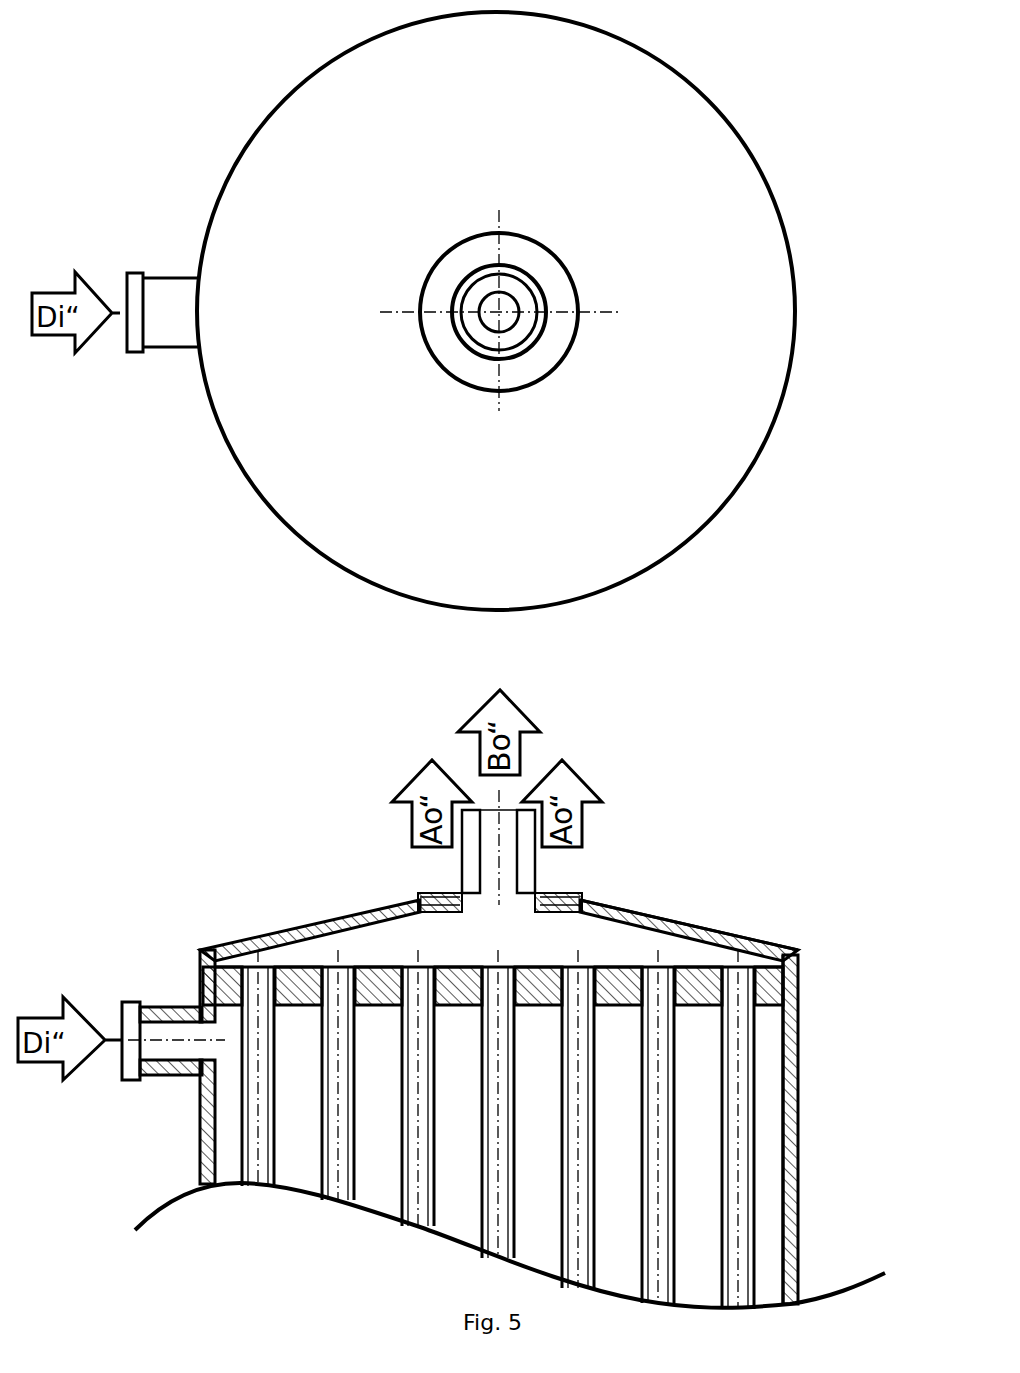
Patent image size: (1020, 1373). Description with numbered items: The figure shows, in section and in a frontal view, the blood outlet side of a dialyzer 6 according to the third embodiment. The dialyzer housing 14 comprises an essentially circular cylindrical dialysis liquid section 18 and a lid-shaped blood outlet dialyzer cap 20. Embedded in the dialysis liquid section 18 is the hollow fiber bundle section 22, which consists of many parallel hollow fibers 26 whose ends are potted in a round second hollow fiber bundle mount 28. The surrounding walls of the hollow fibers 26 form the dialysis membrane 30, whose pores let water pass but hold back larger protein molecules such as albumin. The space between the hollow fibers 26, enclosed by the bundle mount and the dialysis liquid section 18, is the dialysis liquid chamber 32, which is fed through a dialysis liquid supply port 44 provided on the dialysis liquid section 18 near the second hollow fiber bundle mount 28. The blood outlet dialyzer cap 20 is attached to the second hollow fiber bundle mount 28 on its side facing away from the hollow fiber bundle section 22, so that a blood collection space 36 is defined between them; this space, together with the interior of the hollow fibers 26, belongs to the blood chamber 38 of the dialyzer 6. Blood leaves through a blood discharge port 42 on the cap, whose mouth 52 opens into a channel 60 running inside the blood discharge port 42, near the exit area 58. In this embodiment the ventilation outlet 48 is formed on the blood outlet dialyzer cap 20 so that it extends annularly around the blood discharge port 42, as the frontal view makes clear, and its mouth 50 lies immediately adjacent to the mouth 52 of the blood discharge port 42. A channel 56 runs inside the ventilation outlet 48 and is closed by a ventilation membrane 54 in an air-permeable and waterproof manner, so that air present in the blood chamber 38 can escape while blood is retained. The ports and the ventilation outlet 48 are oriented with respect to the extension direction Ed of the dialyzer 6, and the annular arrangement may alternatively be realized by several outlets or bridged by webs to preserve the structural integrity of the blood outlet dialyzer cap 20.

The dialyzer 6 is at (200, 806).
The dialyzer housing 14 is at (800, 1223).
The dialysis liquid section 18 is at (797, 1158).
The blood outlet dialyzer cap 20 is at (695, 930).
The hollow fiber bundle section 22 is at (760, 1197).
The hollow fibers 26 is at (752, 1140).
The second hollow fiber bundle mount 28 is at (198, 987).
The dialysis membrane 30 is at (831, 1129).
The dialysis liquid chamber 32 is at (293, 1112).
The blood collection space 36 is at (612, 937).
The blood chamber 38 is at (333, 1062).
The blood discharge port 42 is at (545, 282).
The dialysis liquid supply port 44 is at (150, 1067).
The ventilation outlet 48 is at (440, 280).
The mouth of the ventilation outlet 50 is at (605, 998).
The mouth of the blood discharge port 52 is at (437, 897).
The ventilation membrane 54 is at (415, 904).
The channel 56 is at (444, 492).
The exit area 58 is at (519, 810).
The channel running inside the blood discharge port 60 is at (510, 307).
The extension direction of the dialyzer Ed is at (485, 868).